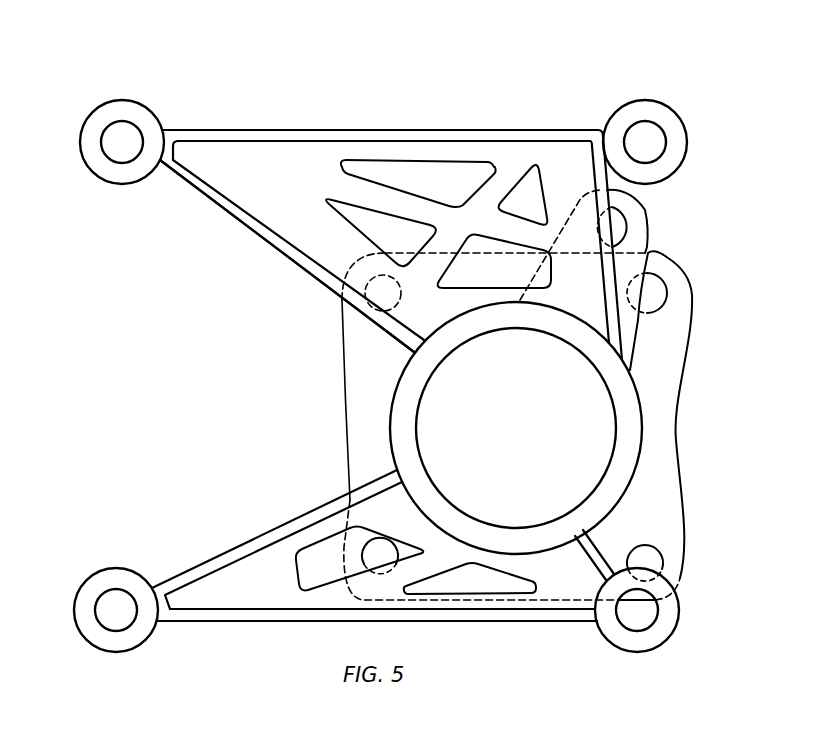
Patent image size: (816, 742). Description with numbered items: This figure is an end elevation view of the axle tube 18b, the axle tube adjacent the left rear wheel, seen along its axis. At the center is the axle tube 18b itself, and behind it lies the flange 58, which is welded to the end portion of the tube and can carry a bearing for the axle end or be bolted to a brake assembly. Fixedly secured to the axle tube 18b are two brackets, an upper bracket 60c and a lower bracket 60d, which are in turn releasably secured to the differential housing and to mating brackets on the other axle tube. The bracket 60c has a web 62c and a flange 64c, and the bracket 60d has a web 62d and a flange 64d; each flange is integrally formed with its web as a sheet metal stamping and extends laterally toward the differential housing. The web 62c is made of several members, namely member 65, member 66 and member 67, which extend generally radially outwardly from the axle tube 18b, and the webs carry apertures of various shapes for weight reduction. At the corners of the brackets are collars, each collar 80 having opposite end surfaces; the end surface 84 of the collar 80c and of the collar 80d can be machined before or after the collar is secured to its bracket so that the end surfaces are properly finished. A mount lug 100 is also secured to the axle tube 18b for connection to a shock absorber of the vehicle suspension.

The axle tube 18b is at (397, 387).
The flange 58 is at (675, 433).
The bracket 60c is at (428, 130).
The bracket 60d is at (513, 622).
The web 62c is at (218, 208).
The web 62d is at (244, 543).
The flange 64c is at (306, 128).
The flange 64d is at (257, 622).
The member 65 is at (290, 258).
The member 66 is at (242, 158).
The member 67 is at (620, 322).
The collar 80 is at (112, 653).
The collar 80c is at (650, 99).
The collar 80d is at (120, 100).
The end surface 84 is at (92, 130).
The mount lug 100 is at (648, 227).